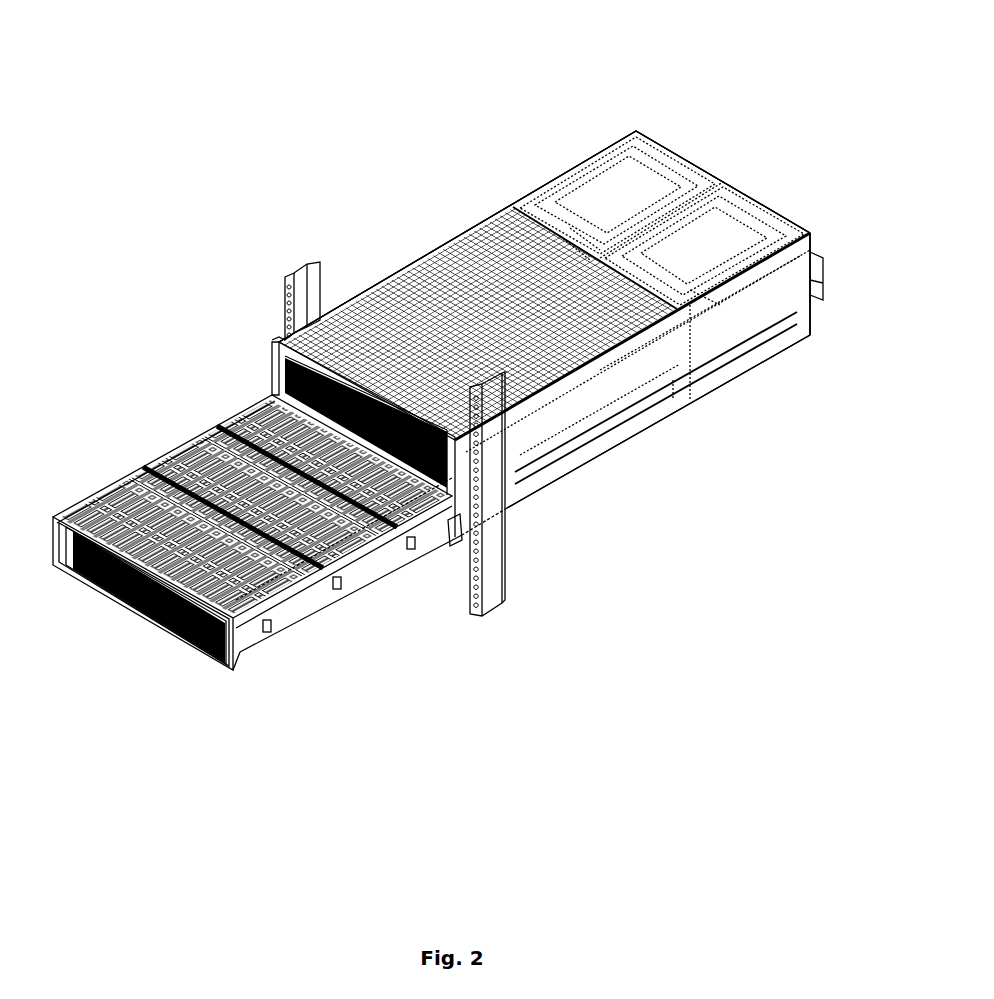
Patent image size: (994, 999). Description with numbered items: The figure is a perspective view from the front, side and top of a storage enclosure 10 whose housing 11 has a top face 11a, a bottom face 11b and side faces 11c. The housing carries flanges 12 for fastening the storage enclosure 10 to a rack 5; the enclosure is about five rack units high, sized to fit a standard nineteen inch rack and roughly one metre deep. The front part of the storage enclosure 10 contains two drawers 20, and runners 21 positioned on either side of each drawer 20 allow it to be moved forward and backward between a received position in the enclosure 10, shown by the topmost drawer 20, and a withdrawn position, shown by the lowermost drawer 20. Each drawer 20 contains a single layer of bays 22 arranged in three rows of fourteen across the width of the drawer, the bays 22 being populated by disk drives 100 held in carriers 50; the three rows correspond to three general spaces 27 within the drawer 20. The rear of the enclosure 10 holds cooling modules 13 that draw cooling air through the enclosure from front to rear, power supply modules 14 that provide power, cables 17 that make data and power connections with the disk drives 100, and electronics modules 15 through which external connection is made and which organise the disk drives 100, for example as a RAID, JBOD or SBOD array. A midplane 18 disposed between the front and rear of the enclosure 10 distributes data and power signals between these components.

The storage enclosure 10 is at (280, 157).
The housing 11 is at (607, 453).
The top face 11a is at (652, 102).
The bottom face 11b is at (660, 458).
The side faces 11c is at (434, 223).
The flanges 12 is at (266, 360).
The cooling modules 13 is at (775, 186).
The power supply modules 14 is at (794, 213).
The electronics modules 15 is at (830, 246).
The cables 17 is at (730, 204).
The midplane 18 is at (517, 206).
The drawer 20 is at (216, 662).
The runners 21 is at (304, 605).
The bays 22 is at (262, 570).
The general spaces 27 is at (253, 413).
The rack 5 is at (489, 596).
The carriers 50 is at (302, 604).
The disk drives 100 is at (411, 543).